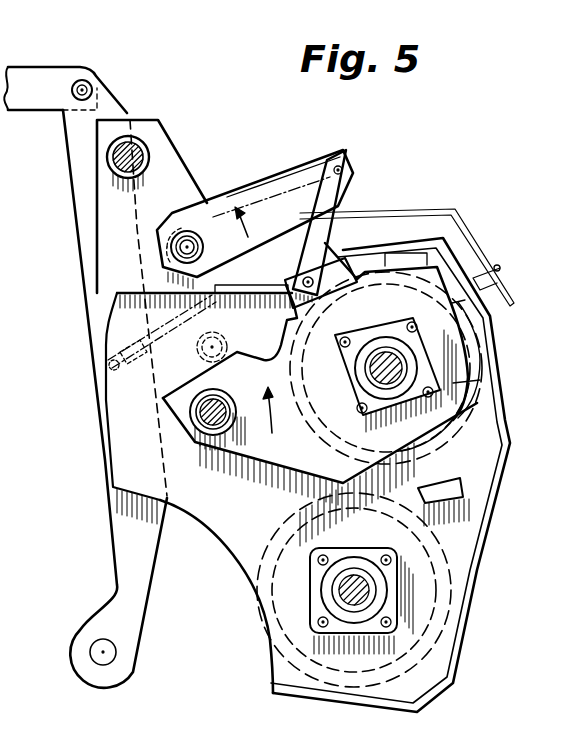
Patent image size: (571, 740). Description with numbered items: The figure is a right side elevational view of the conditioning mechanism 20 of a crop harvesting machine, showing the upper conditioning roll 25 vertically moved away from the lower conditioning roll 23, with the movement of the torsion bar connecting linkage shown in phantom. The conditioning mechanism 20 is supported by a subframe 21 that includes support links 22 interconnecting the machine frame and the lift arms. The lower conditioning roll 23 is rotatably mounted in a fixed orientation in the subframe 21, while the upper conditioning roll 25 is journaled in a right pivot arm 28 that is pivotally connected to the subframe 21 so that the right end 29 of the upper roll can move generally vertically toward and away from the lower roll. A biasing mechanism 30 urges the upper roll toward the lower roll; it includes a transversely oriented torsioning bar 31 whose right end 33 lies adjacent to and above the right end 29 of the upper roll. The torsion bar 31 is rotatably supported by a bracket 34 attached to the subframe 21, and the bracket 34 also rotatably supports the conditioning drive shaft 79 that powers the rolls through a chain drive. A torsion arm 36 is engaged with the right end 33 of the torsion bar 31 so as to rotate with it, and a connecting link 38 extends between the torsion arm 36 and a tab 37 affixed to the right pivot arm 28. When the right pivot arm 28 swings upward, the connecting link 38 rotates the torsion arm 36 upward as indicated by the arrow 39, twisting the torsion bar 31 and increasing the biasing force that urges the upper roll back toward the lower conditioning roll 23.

The conditioning mechanism 20 is at (432, 120).
The subframe 21 is at (240, 537).
The support links 22 is at (84, 163).
The lower conditioning roll 23 is at (256, 609).
The upper conditioning roll 25 is at (470, 344).
The right pivot arm 28 is at (452, 378).
The right end of the upper conditioning roll 29 is at (358, 262).
The biasing mechanism 30 is at (245, 108).
The torsioning bar 31 is at (187, 230).
The right end of the torsion bar 33 is at (178, 248).
The bracket 34 is at (170, 158).
The torsion arm 36 is at (298, 165).
The tab 37 is at (297, 320).
The connecting link 38 is at (352, 177).
The arrow 39 is at (248, 237).
The conditioning drive shaft 79 is at (131, 138).